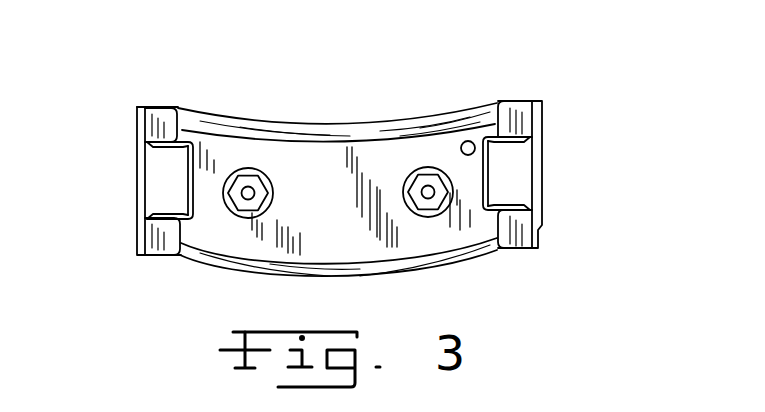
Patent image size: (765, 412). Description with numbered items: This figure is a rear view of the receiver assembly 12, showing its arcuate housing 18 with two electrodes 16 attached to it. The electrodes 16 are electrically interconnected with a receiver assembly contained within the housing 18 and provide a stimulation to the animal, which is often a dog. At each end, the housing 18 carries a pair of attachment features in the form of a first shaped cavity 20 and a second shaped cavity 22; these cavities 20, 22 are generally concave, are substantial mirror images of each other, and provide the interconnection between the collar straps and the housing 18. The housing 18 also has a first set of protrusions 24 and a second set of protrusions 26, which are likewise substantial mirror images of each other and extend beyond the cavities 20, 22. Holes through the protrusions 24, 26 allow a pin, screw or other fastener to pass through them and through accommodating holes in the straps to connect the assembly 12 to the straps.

The receiver assembly 12 is at (459, 88).
The electrodes 16 is at (415, 168).
The arcuate housing 18 is at (143, 107).
The first shaped cavity 20 is at (511, 177).
The second shaped cavity 22 is at (172, 174).
The first set of protrusions 24 is at (537, 112).
The second set of protrusions 26 is at (146, 128).